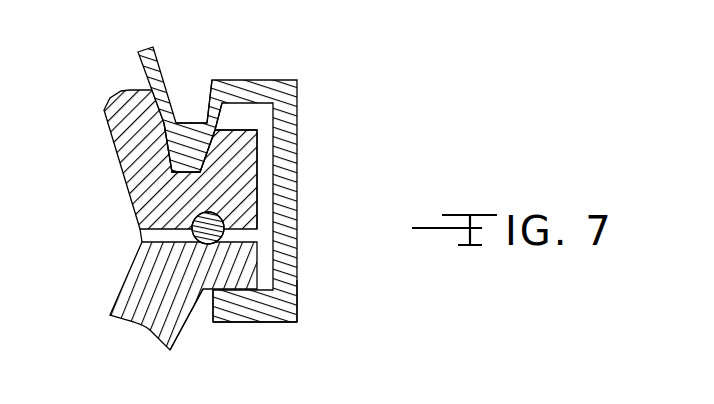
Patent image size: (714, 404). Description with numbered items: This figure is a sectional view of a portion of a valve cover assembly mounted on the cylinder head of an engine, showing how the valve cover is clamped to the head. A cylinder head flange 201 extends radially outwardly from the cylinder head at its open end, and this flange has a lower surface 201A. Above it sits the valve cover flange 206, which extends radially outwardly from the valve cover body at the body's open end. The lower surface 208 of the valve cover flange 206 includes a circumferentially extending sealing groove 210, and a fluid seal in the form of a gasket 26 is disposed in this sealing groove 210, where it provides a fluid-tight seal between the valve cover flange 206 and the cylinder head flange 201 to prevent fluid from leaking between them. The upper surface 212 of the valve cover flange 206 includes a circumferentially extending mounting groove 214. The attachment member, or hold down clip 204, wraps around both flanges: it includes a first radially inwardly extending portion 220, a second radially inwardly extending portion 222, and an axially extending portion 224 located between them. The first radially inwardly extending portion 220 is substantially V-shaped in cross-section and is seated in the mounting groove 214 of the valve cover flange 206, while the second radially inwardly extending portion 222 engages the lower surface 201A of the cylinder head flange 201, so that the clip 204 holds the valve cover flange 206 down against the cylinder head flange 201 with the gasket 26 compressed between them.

The cylinder head flange 201 is at (235, 268).
The lower surface 201A is at (207, 292).
The hold down clip 204 is at (262, 208).
The valve cover flange 206 is at (247, 159).
The lower surface 208 is at (142, 230).
The sealing groove 210 is at (226, 237).
The upper surface 212 is at (237, 130).
The mounting groove 214 is at (170, 156).
The first radially inwardly extending portion 220 is at (263, 80).
The second radially inwardly extending portion 222 is at (263, 323).
The axially extending portion 224 is at (298, 303).
The gasket 26 is at (208, 245).